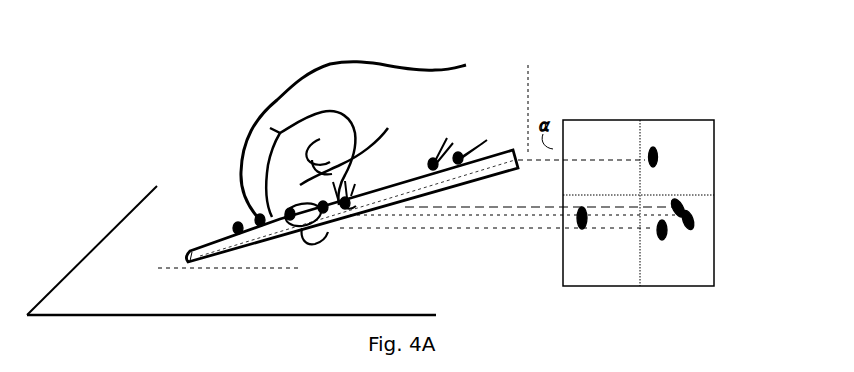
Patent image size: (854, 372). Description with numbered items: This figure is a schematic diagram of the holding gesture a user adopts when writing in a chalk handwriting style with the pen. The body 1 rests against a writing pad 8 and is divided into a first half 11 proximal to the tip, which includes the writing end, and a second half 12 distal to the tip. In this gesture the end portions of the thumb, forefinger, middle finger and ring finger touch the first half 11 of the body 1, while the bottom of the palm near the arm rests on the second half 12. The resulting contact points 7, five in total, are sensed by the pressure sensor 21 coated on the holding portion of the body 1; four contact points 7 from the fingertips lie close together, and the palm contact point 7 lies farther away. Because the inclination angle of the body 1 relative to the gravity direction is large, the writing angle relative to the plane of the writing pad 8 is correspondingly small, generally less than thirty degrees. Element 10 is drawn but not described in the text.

The body 1 is at (508, 138).
The contact points 7 is at (243, 220).
The writing pad 8 is at (107, 254).
The pen axis 10 is at (233, 264).
The first half 11 is at (236, 230).
The second half 12 is at (428, 165).
The pressure sensor 21 is at (714, 148).